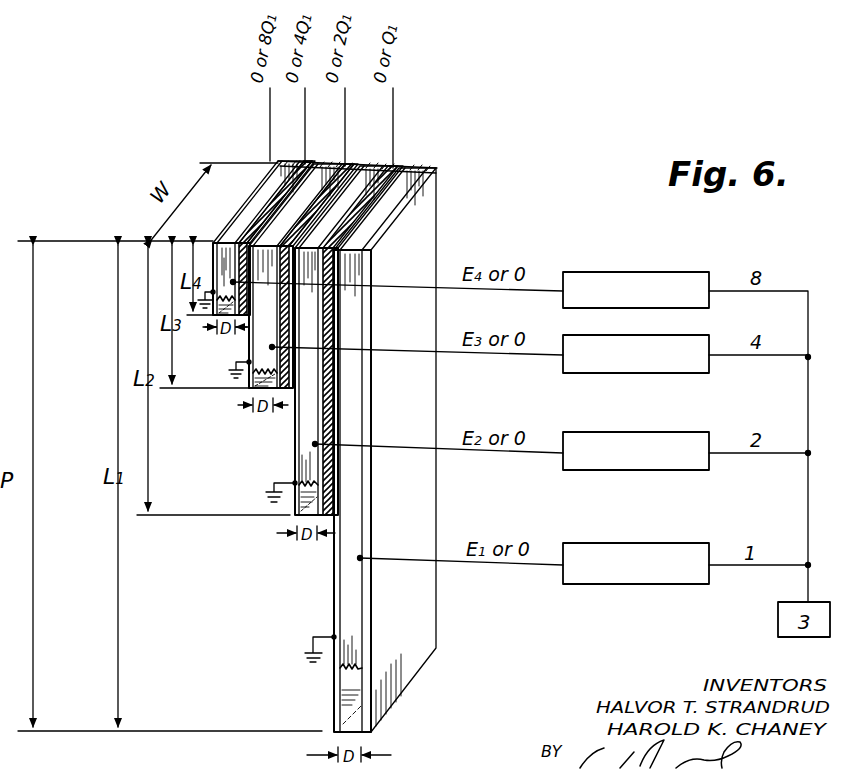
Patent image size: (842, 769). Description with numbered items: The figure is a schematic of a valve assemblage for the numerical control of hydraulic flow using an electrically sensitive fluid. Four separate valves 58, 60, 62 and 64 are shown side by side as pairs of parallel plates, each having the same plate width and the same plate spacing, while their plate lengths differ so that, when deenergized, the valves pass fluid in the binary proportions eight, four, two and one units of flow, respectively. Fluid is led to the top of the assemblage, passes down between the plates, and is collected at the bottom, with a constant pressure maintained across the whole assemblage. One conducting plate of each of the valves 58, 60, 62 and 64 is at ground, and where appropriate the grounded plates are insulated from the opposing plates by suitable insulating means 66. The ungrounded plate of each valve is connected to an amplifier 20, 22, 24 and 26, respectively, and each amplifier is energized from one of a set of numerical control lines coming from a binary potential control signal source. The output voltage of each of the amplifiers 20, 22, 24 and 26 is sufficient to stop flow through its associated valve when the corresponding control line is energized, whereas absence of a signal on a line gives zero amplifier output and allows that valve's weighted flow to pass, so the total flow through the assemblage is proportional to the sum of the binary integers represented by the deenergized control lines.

The valve 58 is at (250, 232).
The valve 60 is at (293, 228).
The valve 62 is at (348, 331).
The valve 64 is at (364, 270).
The insulating means 66 is at (402, 236).
The amplifier 20 is at (650, 272).
The amplifier 22 is at (653, 335).
The amplifier 24 is at (647, 432).
The amplifier 26 is at (640, 543).